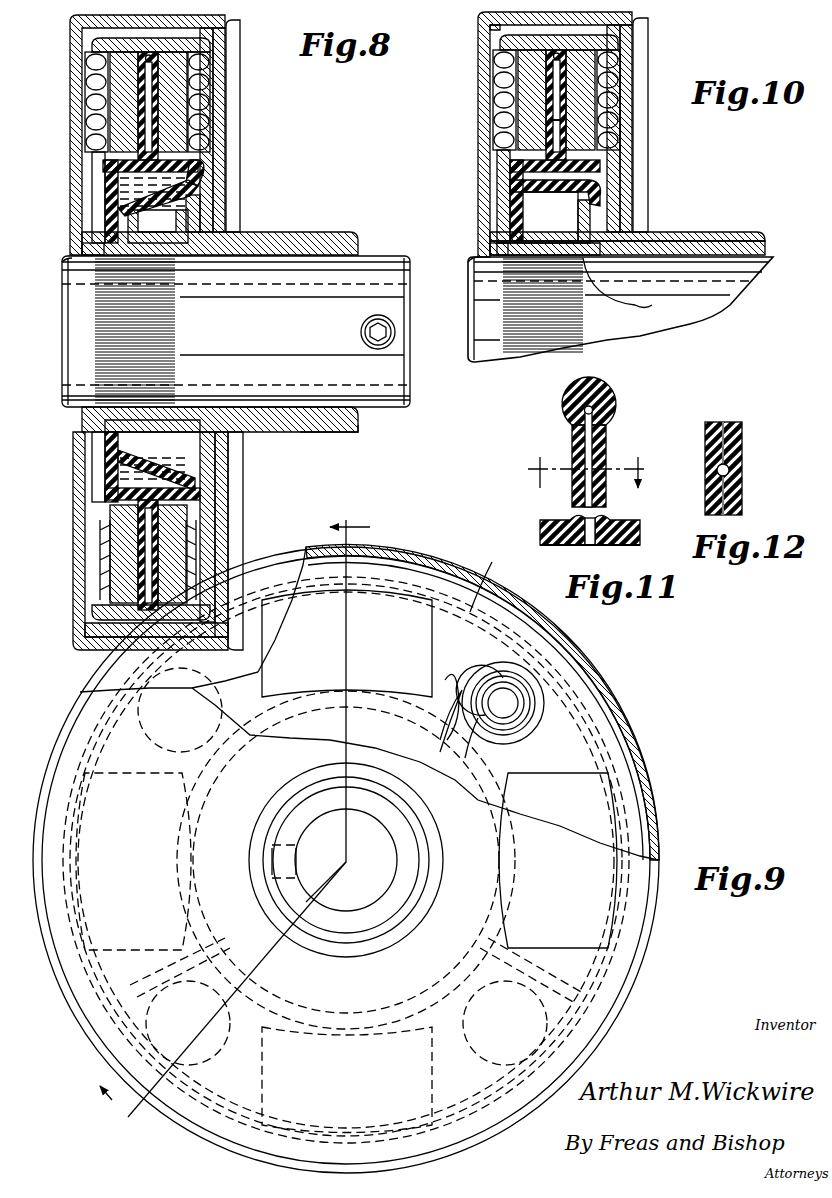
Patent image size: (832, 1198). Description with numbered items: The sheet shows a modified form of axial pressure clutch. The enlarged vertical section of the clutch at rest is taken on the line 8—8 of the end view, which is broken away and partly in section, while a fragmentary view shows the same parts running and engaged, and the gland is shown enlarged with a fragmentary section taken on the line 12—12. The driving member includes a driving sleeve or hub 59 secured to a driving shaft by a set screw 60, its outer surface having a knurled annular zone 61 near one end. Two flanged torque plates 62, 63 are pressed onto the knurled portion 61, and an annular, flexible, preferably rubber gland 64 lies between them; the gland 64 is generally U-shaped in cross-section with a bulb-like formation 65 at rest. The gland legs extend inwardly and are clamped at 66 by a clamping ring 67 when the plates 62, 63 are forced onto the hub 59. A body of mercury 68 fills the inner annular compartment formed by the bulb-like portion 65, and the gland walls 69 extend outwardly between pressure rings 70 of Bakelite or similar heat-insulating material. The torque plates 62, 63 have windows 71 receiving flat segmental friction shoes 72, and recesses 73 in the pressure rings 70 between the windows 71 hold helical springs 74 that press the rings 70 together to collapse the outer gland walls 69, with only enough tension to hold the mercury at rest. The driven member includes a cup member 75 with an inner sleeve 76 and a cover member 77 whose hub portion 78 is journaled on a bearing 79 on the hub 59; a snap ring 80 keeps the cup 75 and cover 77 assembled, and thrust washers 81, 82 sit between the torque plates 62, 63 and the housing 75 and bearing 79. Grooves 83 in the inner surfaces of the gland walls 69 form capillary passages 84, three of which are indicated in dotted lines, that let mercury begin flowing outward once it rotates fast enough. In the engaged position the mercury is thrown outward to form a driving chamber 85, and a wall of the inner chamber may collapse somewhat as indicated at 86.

In FIG. 9, the section line 8— 8 is at (231, 815).
In FIG. 11, the section line 12— 12 is at (587, 483).
In FIG. 8, the driving sleeve or hub 59 is at (375, 266).
In FIG. 10, the driving sleeve or hub 59 is at (706, 320).
In FIG. 9, the driving sleeve or hub 59 is at (402, 838).
In FIG. 8, the set screw 60 is at (396, 330).
In FIG. 8, the knurled annular zone 61 is at (165, 320).
In FIG. 10, the knurled annular zone 61 is at (570, 322).
In FIG. 8, the torque plate 62 is at (102, 182).
In FIG. 10, the torque plate 62 is at (500, 200).
In FIG. 8, the torque plate 63 is at (210, 170).
In FIG. 10, the torque plate 63 is at (612, 210).
In FIG. 9, the torque plate 63 is at (462, 610).
In FIG. 8, the gland 64 is at (195, 165).
In FIG. 10, the gland 64 is at (600, 166).
In FIG. 11, the gland 64 is at (612, 400).
In FIG. 8, the bulb-like formation 65 is at (192, 190).
In FIG. 8, the clamping location 66 is at (95, 232).
In FIG. 10, the clamping location 66 is at (497, 238).
In FIG. 8, the clamping ring 67 is at (162, 262).
In FIG. 10, the clamping ring 67 is at (552, 240).
In FIG. 8, the body of mercury 68 is at (105, 168).
In FIG. 8, the gland walls 69 is at (140, 90).
In FIG. 10, the gland walls 69 is at (548, 130).
In FIG. 11, the gland walls 69 is at (572, 435).
In FIG. 12, the gland walls 69 is at (705, 450).
In FIG. 8, the pressure rings 70 is at (122, 75).
In FIG. 10, the pressure rings 70 is at (525, 90).
In FIG. 9, the pressure rings 70 is at (548, 700).
In FIG. 8, the windows 71 is at (205, 150).
In FIG. 10, the windows 71 is at (500, 48).
In FIG. 9, the windows 71 is at (432, 705).
In FIG. 10, the friction shoes 72 is at (500, 120).
In FIG. 9, the friction shoes 72 is at (346, 861).
In FIG. 8, the recesses 73 is at (185, 498).
In FIG. 9, the recesses 73 is at (185, 750).
In FIG. 8, the helical springs 74 is at (196, 540).
In FIG. 9, the helical springs 74 is at (530, 665).
In FIG. 8, the cup member 75 is at (78, 575).
In FIG. 10, the cup member 75 is at (478, 73).
In FIG. 9, the cup member 75 is at (640, 748).
In FIG. 8, the inner sleeve 76 is at (112, 648).
In FIG. 10, the inner sleeve 76 is at (493, 28).
In FIG. 9, the inner sleeve 76 is at (622, 728).
In FIG. 8, the cover member 77 is at (222, 588).
In FIG. 10, the cover member 77 is at (632, 140).
In FIG. 9, the cover member 77 is at (583, 912).
In FIG. 8, the hub portion 78 is at (310, 433).
In FIG. 10, the hub portion 78 is at (718, 240).
In FIG. 9, the hub portion 78 is at (425, 918).
In FIG. 8, the bearing 79 is at (352, 418).
In FIG. 10, the bearing 79 is at (758, 248).
In FIG. 9, the bearing 79 is at (382, 938).
In FIG. 8, the snap ring 80 is at (232, 622).
In FIG. 10, the snap ring 80 is at (640, 30).
In FIG. 9, the snap ring 80 is at (618, 978).
In FIG. 8, the thrust washer 81 is at (70, 258).
In FIG. 10, the thrust washer 81 is at (490, 258).
In FIG. 8, the thrust washer 82 is at (186, 228).
In FIG. 10, the thrust washer 82 is at (580, 262).
In FIG. 8, the grooves 83 is at (95, 125).
In FIG. 11, the grooves 83 is at (572, 450).
In FIG. 12, the grooves 83 is at (742, 455).
In FIG. 12, the capillary passages 84 is at (730, 472).
In FIG. 10, the driving chamber 85 is at (560, 118).
In FIG. 10, the collapsed wall 86 is at (600, 188).